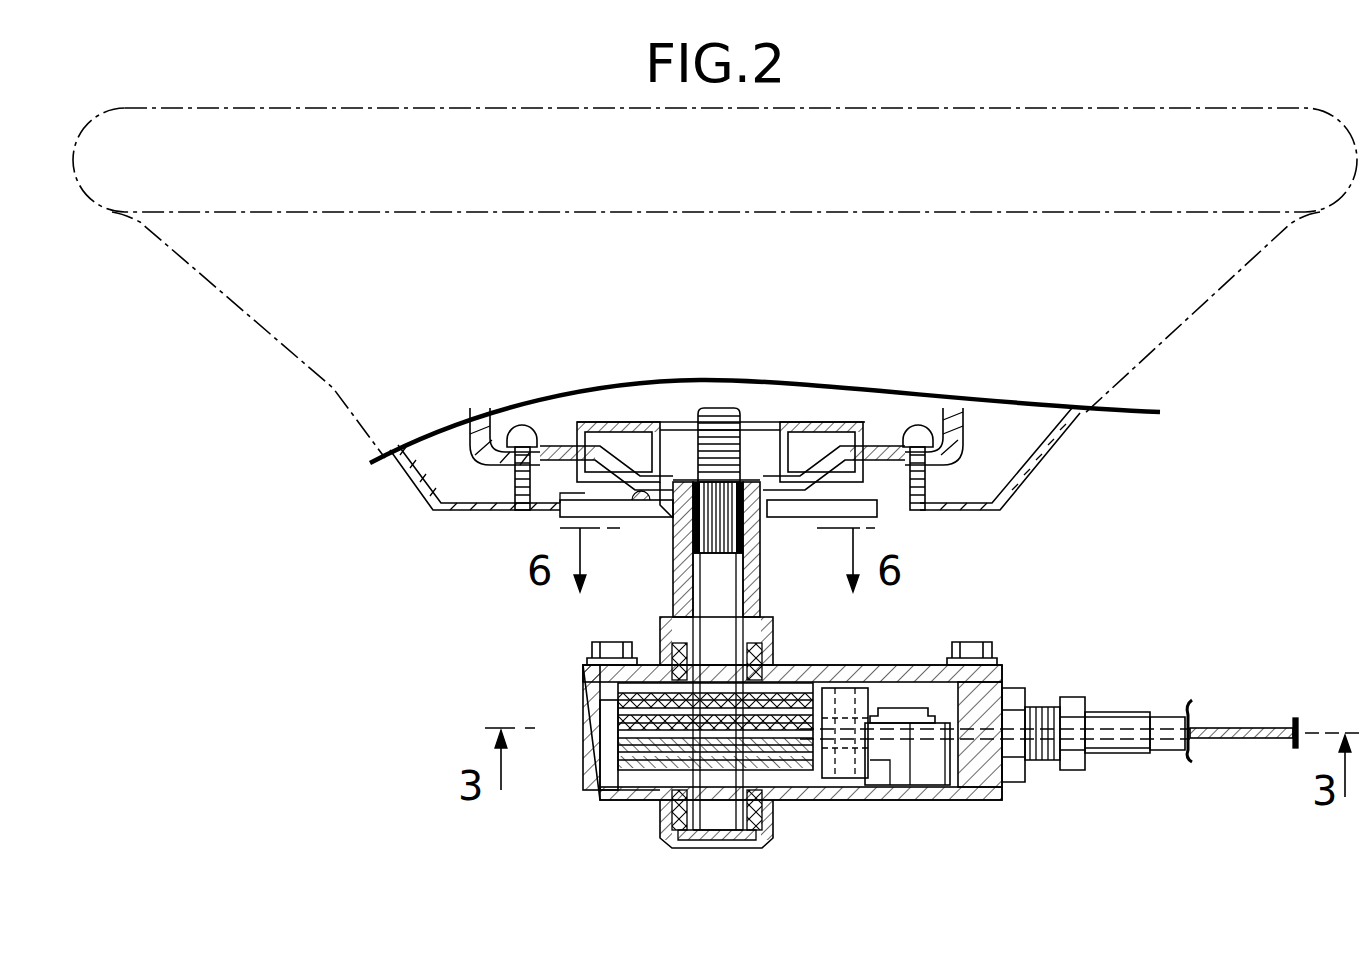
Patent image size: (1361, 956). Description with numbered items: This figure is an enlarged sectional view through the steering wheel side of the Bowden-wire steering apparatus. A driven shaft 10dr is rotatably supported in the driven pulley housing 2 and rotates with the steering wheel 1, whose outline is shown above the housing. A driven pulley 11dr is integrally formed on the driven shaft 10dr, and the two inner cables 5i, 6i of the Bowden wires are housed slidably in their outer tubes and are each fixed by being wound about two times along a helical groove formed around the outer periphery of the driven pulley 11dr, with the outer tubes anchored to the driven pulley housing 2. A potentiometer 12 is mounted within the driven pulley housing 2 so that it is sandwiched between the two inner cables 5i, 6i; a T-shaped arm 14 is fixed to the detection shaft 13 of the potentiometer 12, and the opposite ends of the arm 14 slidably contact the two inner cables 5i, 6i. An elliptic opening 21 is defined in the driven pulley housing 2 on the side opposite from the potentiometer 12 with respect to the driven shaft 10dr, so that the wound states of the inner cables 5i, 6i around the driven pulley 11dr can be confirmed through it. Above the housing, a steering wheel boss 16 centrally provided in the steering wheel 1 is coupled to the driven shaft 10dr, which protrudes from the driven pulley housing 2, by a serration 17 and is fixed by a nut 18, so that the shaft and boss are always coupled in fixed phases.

The steering wheel 1 is at (300, 357).
The driven pulley housing 2 is at (815, 806).
The inner cable 5i is at (622, 798).
The inner cable 6i is at (612, 702).
The driven shaft 10dr is at (740, 597).
The driven pulley 11dr is at (640, 792).
The potentiometer 12 is at (925, 772).
The detection shaft 13 is at (905, 708).
The T-shaped arm 14 is at (858, 690).
The steering wheel boss 16 is at (681, 565).
The serration 17 is at (757, 530).
The nut 18 is at (752, 440).
The elliptic opening 21 is at (598, 752).